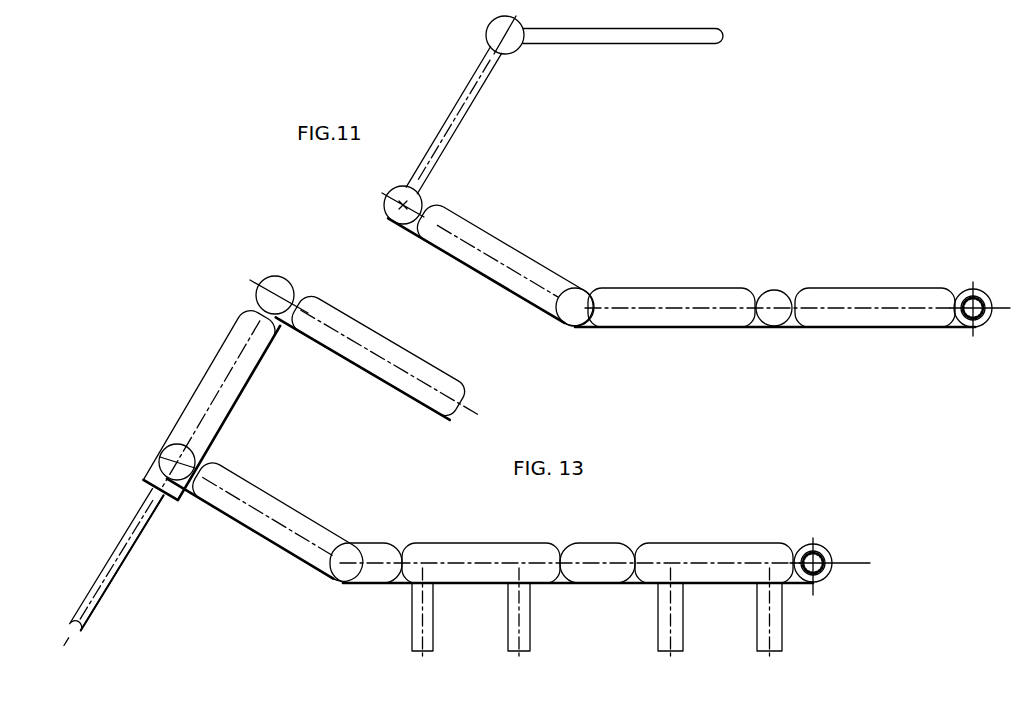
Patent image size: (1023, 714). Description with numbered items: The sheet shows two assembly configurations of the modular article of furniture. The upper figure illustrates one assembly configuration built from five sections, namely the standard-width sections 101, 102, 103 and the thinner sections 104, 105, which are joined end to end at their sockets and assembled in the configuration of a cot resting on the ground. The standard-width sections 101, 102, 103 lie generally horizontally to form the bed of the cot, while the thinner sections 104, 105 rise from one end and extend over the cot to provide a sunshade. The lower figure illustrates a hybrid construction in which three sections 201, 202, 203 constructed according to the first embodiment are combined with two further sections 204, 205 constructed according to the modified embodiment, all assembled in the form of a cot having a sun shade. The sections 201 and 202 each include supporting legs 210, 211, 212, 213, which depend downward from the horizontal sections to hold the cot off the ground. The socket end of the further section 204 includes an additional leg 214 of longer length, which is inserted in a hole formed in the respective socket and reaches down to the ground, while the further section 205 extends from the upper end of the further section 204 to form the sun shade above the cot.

In FIG. 11, the standard-width section 101 is at (857, 295).
In FIG. 11, the standard-width section 102 is at (660, 293).
In FIG. 11, the standard-width section 103 is at (545, 270).
In FIG. 11, the thinner section 104 is at (457, 125).
In FIG. 11, the thinner section 105 is at (630, 40).
In FIG. 13, the section 201 is at (743, 550).
In FIG. 13, the section 202 is at (505, 548).
In FIG. 13, the section 203 is at (293, 517).
In FIG. 13, the further section 204 is at (230, 405).
In FIG. 13, the further section 205 is at (432, 365).
In FIG. 13, the supporting leg 210 is at (781, 613).
In FIG. 13, the supporting leg 211 is at (684, 618).
In FIG. 13, the supporting leg 212 is at (531, 613).
In FIG. 13, the supporting leg 213 is at (433, 613).
In FIG. 13, the additional leg 214 is at (120, 565).